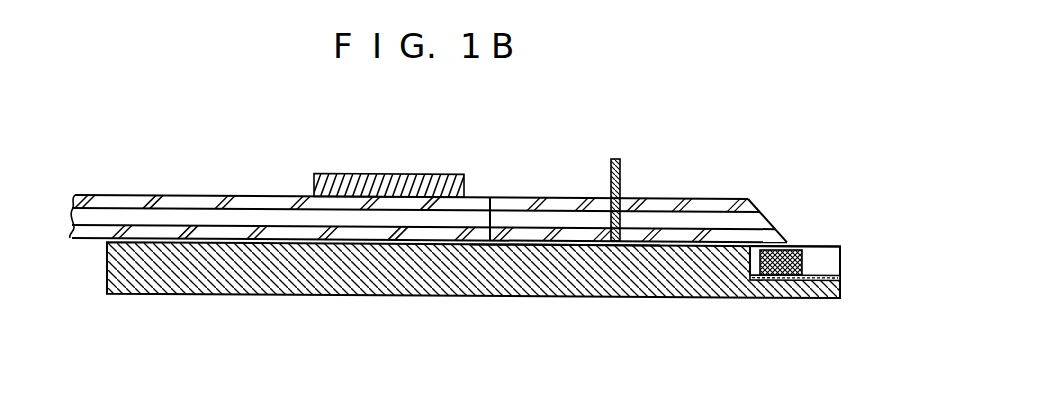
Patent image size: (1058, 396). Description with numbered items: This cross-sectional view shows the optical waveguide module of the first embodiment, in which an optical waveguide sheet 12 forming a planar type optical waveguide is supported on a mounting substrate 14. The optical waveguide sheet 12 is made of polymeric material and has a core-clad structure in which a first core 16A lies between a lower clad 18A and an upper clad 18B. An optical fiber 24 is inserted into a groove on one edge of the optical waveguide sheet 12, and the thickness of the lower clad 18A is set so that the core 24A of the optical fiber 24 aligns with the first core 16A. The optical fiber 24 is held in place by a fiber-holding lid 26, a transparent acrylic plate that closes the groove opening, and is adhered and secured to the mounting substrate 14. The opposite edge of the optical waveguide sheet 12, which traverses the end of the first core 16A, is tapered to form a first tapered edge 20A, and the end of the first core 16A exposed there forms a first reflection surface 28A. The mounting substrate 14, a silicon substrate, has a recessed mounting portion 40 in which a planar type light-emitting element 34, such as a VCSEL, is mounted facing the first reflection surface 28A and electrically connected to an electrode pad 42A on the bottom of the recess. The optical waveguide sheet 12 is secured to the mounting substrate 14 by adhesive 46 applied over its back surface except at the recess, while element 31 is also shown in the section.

The optical waveguide sheet 12 is at (703, 198).
The mounting substrate 14 is at (320, 292).
The first core 16A is at (673, 223).
The lower clad 18A is at (590, 235).
The upper clad 18B is at (527, 207).
The first tapered edge 20A is at (783, 244).
The optical fiber 24 is at (118, 196).
The core of the optical fiber 24A is at (172, 220).
The fiber-holding lid 26 is at (345, 174).
The first reflection surface 28A is at (775, 228).
The lead terminal 31 is at (617, 159).
The planar type light-emitting element 34 is at (775, 276).
The step wall 40 is at (737, 248).
The electrode pad 42A is at (820, 281).
The adhesive 46 is at (568, 244).